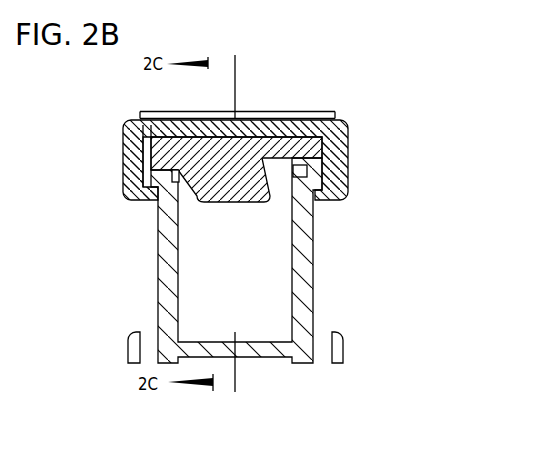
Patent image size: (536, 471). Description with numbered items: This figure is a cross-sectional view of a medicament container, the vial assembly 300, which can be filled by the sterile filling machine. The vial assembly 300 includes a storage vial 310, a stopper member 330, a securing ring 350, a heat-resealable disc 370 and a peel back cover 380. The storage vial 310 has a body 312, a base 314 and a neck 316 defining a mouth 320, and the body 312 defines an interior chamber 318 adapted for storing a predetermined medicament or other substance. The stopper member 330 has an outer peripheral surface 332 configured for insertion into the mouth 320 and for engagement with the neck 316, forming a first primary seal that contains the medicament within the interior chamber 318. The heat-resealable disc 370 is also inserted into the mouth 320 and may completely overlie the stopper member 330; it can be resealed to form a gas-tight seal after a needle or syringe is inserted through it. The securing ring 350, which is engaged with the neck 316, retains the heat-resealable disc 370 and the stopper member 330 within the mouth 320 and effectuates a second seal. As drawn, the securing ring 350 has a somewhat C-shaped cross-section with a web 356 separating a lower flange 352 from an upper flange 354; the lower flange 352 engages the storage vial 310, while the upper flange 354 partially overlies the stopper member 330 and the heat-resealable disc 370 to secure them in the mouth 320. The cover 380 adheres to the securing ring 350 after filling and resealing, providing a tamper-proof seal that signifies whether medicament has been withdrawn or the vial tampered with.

The vial assembly 300 is at (227, 227).
The storage vial 310 is at (216, 271).
The body 312 is at (314, 268).
The base 314 is at (343, 347).
The neck 316 is at (143, 143).
The interior chamber 318 is at (262, 332).
The mouth 320 is at (219, 156).
The stopper member 330 is at (274, 214).
The outer peripheral surface 332 is at (345, 160).
The securing ring 350 is at (227, 160).
The lower flange 352 is at (143, 200).
The upper flange 354 is at (140, 117).
The web 356 is at (123, 177).
The heat-resealable disc 370 is at (303, 120).
The peel back cover 380 is at (262, 111).